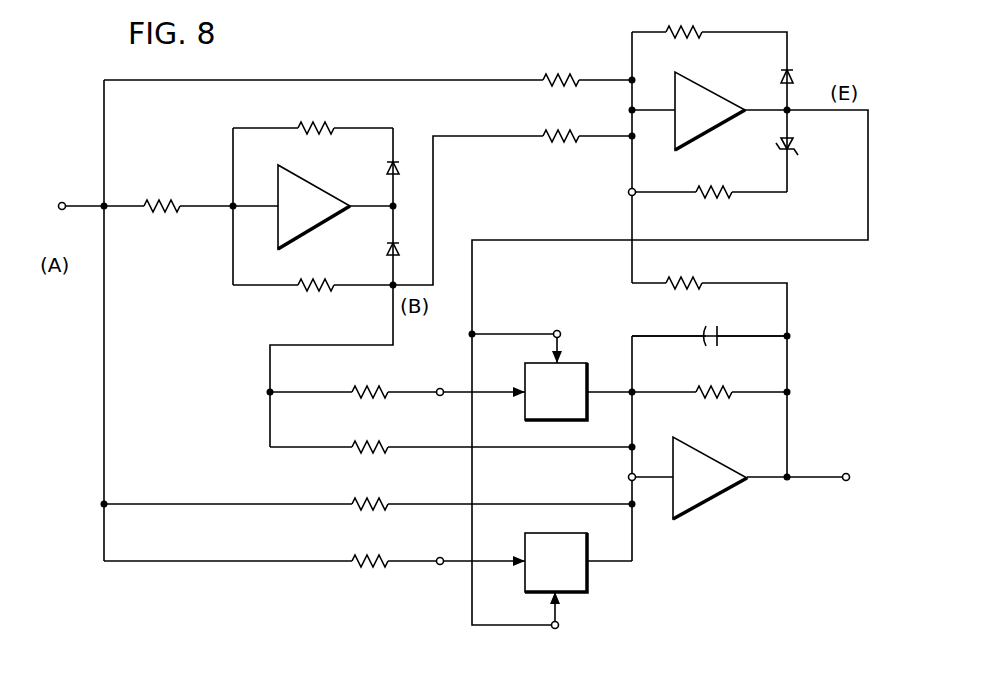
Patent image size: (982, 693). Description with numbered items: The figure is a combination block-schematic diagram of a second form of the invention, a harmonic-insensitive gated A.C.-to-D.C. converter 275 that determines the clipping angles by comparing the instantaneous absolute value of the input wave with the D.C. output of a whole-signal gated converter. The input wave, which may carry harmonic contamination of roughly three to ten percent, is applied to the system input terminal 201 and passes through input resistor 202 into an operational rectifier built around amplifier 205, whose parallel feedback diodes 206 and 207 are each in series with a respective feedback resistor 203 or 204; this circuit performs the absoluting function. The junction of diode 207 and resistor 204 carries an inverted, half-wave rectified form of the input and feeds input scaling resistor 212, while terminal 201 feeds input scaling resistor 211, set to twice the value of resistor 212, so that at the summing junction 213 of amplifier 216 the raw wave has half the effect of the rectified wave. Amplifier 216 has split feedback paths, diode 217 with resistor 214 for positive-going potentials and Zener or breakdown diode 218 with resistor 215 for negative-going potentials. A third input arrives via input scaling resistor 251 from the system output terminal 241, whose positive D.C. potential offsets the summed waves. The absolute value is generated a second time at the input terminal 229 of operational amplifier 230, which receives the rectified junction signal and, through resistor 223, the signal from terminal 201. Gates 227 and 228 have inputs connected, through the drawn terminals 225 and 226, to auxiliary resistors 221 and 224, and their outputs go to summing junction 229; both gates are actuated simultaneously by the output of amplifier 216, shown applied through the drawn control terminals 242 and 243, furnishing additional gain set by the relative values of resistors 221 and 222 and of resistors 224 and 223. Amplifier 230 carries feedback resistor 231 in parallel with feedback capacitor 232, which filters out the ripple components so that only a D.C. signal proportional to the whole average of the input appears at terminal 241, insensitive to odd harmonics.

The system input terminal 201 is at (59, 210).
The input resistor 202 is at (147, 200).
The feedback resistor 203 is at (300, 130).
The feedback resistor 204 is at (303, 290).
The amplifier 205 is at (313, 236).
The feedback diode 206 is at (400, 170).
The feedback diode 207 is at (402, 248).
The input scaling resistor 211 is at (560, 75).
The input scaling resistor 212 is at (576, 142).
The summing junction 213 is at (628, 195).
The resistor 214 is at (702, 40).
The resistor 215 is at (700, 197).
The amplifier 216 is at (700, 140).
The diode 217 is at (797, 75).
The Zener or breakdown diode 218 is at (800, 148).
The auxiliary resistor 221 is at (363, 397).
The resistor 222 is at (363, 452).
The resistor 223 is at (363, 508).
The auxiliary resistor 224 is at (385, 566).
The terminal 225 is at (440, 385).
The terminal 226 is at (438, 568).
The gate 227 is at (572, 362).
The gate 228 is at (568, 595).
The input terminal 229 is at (634, 481).
The operational amplifier 230 is at (718, 497).
The feedback resistor 231 is at (702, 395).
The feedback capacitor 232 is at (718, 334).
The system output terminal 241 is at (847, 483).
The control terminal 242 is at (556, 328).
The control terminal 243 is at (553, 630).
The input scaling resistor 251 is at (668, 282).
The harmonic-insensitive gated A.C.-to-D.C. converter 275 is at (226, 592).